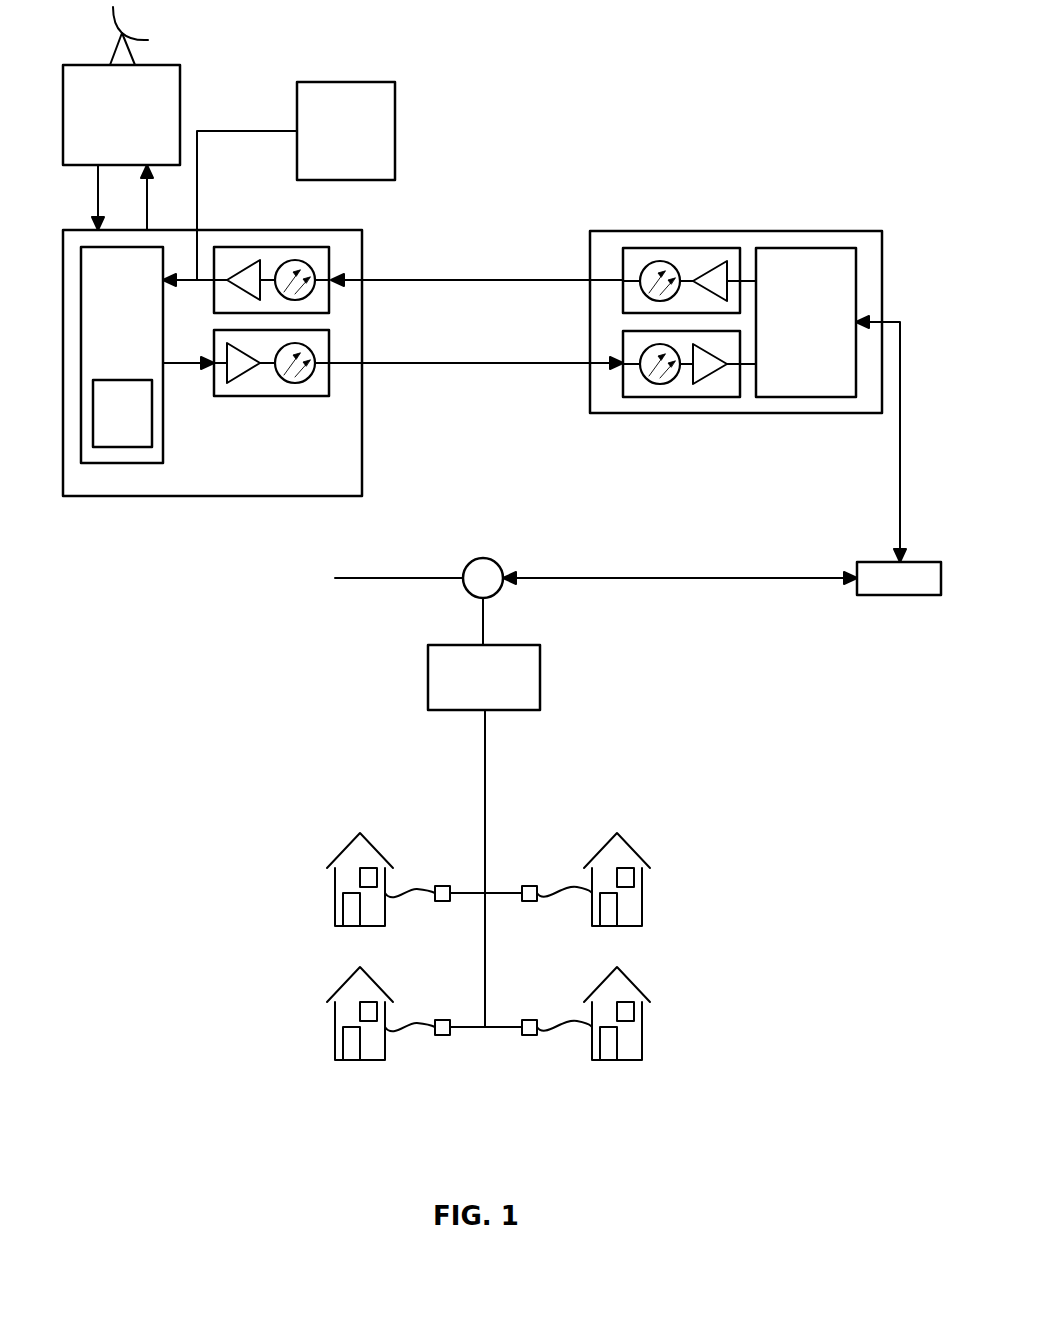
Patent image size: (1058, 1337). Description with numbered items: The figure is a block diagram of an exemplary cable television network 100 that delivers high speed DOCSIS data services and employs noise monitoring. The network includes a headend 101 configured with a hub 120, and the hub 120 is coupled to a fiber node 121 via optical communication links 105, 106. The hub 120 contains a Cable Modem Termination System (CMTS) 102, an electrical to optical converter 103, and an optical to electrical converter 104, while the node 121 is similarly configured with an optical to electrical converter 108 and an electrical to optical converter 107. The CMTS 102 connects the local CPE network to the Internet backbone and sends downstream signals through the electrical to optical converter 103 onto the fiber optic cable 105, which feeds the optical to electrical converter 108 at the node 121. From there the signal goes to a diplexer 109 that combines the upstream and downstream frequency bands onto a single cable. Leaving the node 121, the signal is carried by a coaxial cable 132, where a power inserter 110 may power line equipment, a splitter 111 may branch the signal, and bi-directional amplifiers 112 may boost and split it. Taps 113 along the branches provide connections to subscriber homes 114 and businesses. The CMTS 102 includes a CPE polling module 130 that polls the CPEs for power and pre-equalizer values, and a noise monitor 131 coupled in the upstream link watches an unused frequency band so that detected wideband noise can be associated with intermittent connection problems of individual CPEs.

The cable television network 100 is at (748, 80).
The headend 101 is at (104, 131).
The Cable Modem Termination System (CMTS) 102 is at (105, 319).
The electrical to optical converter 103 is at (272, 397).
The optical to electrical converter 104 is at (253, 247).
The optical communication link (fiber optic cable) 105 is at (427, 362).
The optical communication link 106 is at (470, 278).
The electrical to optical converter 107 is at (682, 248).
The optical to electrical converter 108 is at (682, 397).
The diplexer 109 is at (790, 346).
The power inserter 110 is at (884, 589).
The splitter 111 is at (483, 558).
The bi-directional amplifier 112 is at (484, 836).
The taps 113 is at (443, 886).
The subscriber homes 114 is at (355, 832).
The hub 120 is at (213, 496).
The fiber node 121 is at (850, 413).
The CPE polling module 130 is at (106, 423).
The noise monitor 131 is at (330, 166).
The coaxial cable 132 is at (899, 518).